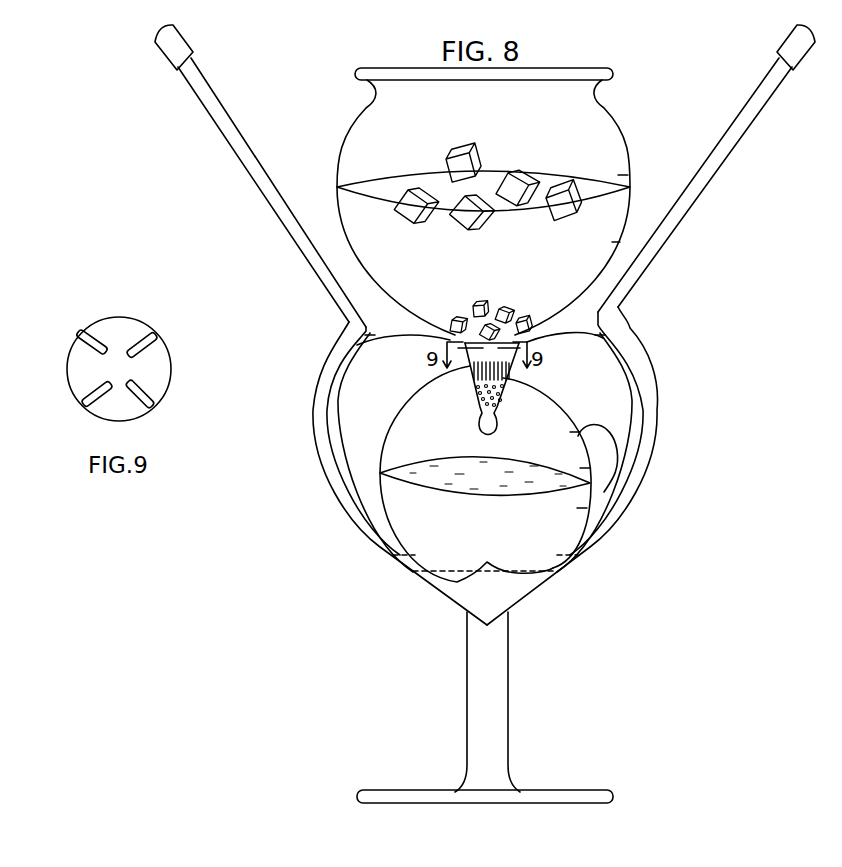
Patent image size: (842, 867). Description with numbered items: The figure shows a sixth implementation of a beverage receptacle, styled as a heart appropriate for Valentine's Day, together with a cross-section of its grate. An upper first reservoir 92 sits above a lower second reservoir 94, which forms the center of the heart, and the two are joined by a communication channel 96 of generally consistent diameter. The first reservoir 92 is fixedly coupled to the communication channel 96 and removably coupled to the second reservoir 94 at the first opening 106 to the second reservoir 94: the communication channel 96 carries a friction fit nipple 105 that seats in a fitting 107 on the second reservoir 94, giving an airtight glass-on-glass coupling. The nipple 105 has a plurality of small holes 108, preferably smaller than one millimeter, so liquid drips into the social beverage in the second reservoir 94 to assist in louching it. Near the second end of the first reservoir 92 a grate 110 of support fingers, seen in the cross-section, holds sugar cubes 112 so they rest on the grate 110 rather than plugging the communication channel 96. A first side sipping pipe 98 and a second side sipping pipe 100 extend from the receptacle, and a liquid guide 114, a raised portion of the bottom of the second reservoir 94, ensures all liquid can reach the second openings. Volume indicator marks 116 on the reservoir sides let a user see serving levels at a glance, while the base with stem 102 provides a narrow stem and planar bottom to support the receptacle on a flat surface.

In FIG. 8, the first reservoir 92 is at (606, 152).
In FIG. 8, the second reservoir 94 is at (400, 520).
In FIG. 8, the communication channel 96 is at (515, 371).
In FIG. 8, the first side sipping pipe 98 is at (250, 167).
In FIG. 8, the second side sipping pipe 100 is at (737, 132).
In FIG. 8, the base with stem 102 is at (500, 723).
In FIG. 8, the friction fit nipple 105 is at (478, 385).
In FIG. 8, the first opening in the second reservoir 106 is at (520, 415).
In FIG. 8, the fitting 107 is at (470, 365).
In FIG. 8, the plurality of small holes 108 is at (478, 392).
In FIG. 8, the grate 110 is at (357, 345).
In FIG. 9, the grate 110 is at (84, 340).
In FIG. 8, the sugar cubes 112 is at (490, 310).
In FIG. 8, the liquid guide 114 is at (478, 573).
In FIG. 8, the volume indicator marks 116 is at (620, 172).